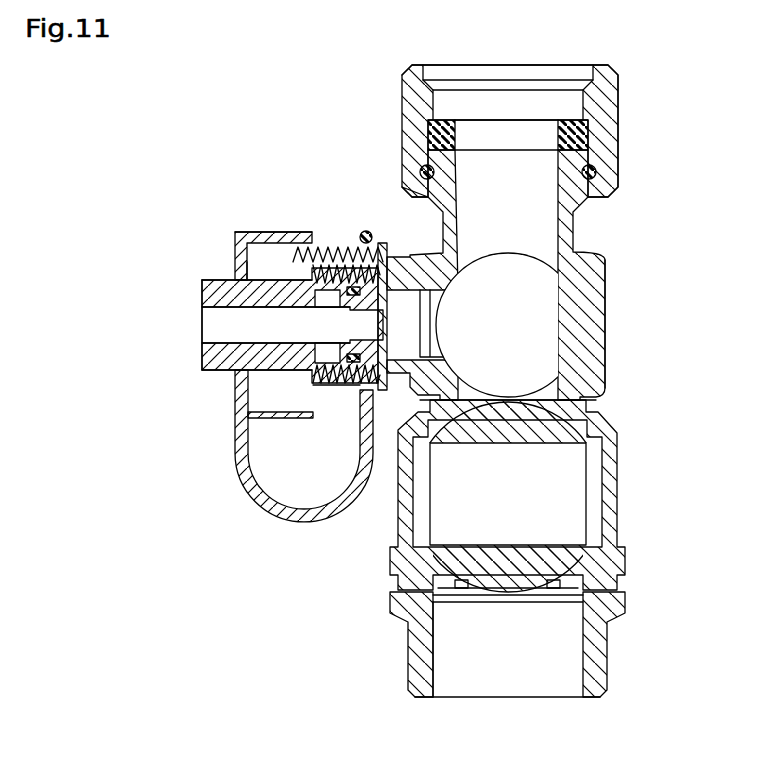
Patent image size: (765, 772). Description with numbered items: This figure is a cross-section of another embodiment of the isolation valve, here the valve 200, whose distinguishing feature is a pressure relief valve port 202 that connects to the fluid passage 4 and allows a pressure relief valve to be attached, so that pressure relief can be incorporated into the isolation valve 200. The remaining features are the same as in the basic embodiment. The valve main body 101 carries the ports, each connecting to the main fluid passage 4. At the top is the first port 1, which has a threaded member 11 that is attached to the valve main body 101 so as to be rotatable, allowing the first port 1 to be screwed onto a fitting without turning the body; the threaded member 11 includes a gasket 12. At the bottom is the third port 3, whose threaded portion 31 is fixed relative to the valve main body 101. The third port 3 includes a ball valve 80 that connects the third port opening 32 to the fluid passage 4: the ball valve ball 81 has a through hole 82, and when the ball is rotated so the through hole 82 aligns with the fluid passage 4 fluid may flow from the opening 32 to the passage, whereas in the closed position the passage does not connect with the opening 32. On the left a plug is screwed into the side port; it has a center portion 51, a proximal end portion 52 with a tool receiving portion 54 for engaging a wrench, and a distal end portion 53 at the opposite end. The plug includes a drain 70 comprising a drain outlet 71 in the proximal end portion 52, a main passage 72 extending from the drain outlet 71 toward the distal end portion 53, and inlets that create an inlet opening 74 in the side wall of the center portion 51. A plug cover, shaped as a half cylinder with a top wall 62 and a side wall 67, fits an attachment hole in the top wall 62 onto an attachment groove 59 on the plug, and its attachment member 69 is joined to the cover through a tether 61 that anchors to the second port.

The valve 200 is at (675, 63).
The first port 1 is at (413, 66).
The threaded member 11 is at (618, 153).
The gasket 12 is at (592, 145).
The fluid passage 4 is at (545, 223).
The pressure relief valve port 202 is at (540, 278).
The valve main body 101 is at (606, 322).
The distal end portion 53 is at (385, 290).
The attachment member 69 is at (366, 232).
The drain 70 is at (292, 312).
The proximal end portion 52 is at (205, 362).
The main passage 72 is at (250, 320).
The drain outlet 71 is at (203, 325).
The tool receiving portion 54 is at (212, 280).
The attachment groove 59 is at (245, 272).
The top wall 62 is at (238, 237).
The side wall 67 is at (280, 232).
The tether 61 is at (305, 522).
The center portion 51 is at (240, 391).
The inlet opening 74 is at (328, 395).
The ball valve 80 is at (615, 495).
The ball valve ball 81 is at (560, 413).
The through hole 82 is at (580, 472).
The third port 3 is at (607, 650).
The threaded portion 31 is at (437, 668).
The opening 32 is at (583, 700).